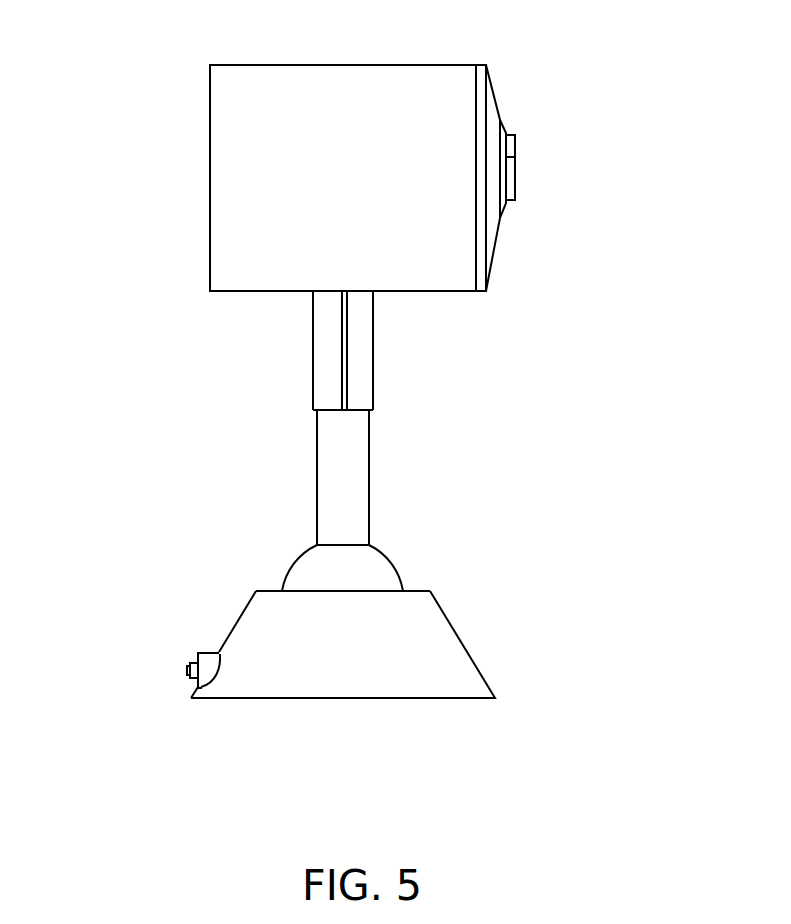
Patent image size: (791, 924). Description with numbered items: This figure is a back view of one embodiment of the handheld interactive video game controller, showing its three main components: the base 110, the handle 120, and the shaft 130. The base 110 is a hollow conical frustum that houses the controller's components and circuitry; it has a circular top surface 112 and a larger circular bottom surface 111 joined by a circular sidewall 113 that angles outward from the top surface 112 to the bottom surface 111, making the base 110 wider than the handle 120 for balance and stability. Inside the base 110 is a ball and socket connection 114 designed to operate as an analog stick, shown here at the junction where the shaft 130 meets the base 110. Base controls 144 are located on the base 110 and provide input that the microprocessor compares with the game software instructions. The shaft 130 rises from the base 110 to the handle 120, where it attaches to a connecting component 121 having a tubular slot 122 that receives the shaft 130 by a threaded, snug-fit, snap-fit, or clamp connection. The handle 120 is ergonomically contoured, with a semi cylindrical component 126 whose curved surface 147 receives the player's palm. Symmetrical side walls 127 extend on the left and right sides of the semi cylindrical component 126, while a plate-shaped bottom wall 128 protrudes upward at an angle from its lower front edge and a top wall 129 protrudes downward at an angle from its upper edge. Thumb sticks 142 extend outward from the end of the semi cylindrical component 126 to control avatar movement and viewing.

The base 110 is at (512, 641).
The bottom surface 111 is at (242, 704).
The top surface 112 is at (273, 585).
The circular sidewall 113 is at (217, 637).
The ball and socket connection 114 is at (428, 560).
The handle 120 is at (570, 72).
The connecting component 121 is at (405, 365).
The tubular slot 122 is at (320, 367).
The semi cylindrical component 126 is at (160, 157).
The side walls 127 is at (205, 207).
The bottom wall 128 is at (225, 298).
The top wall 129 is at (355, 53).
The shaft 130 is at (280, 475).
The thumb sticks 142 is at (526, 178).
The base controls 144 is at (175, 668).
The curved surface 147 is at (253, 131).